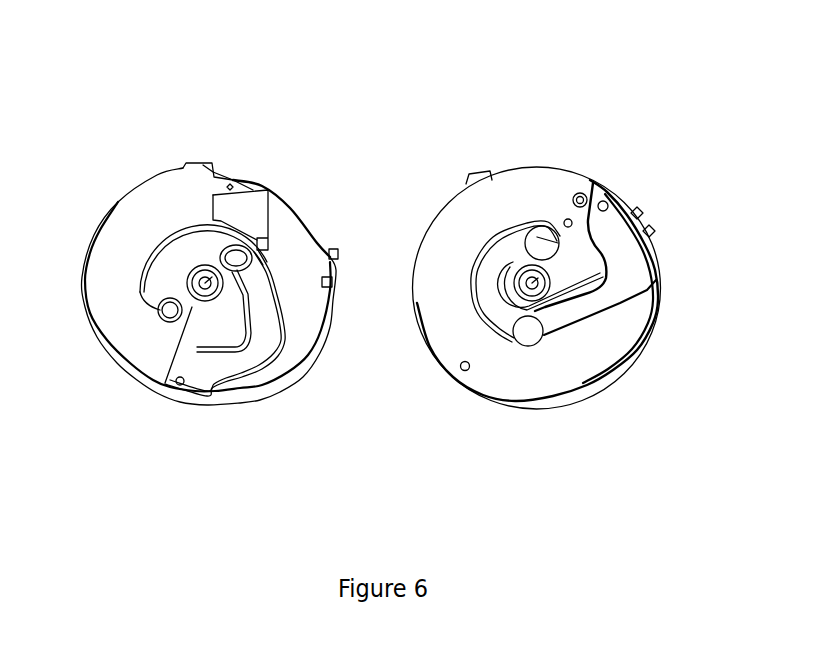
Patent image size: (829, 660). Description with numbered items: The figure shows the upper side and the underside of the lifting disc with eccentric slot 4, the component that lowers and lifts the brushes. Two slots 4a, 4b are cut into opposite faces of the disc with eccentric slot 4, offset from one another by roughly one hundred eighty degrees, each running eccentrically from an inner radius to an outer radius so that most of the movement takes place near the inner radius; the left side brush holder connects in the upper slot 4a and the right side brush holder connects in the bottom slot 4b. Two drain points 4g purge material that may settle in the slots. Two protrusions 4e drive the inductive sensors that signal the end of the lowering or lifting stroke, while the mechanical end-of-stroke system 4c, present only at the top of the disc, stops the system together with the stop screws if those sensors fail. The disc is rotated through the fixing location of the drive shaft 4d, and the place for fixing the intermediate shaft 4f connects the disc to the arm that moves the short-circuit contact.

The disc with eccentric slot 4 is at (530, 206).
The upper slot 4a is at (170, 260).
The bottom slot 4b is at (622, 260).
The mechanical end-of-stroke system 4c is at (236, 207).
The fixing location of the drive shaft 4d is at (200, 290).
The protrusions 4e is at (288, 198).
The place for fixing the intermediate shaft 4f is at (581, 192).
The drain points 4g is at (529, 337).